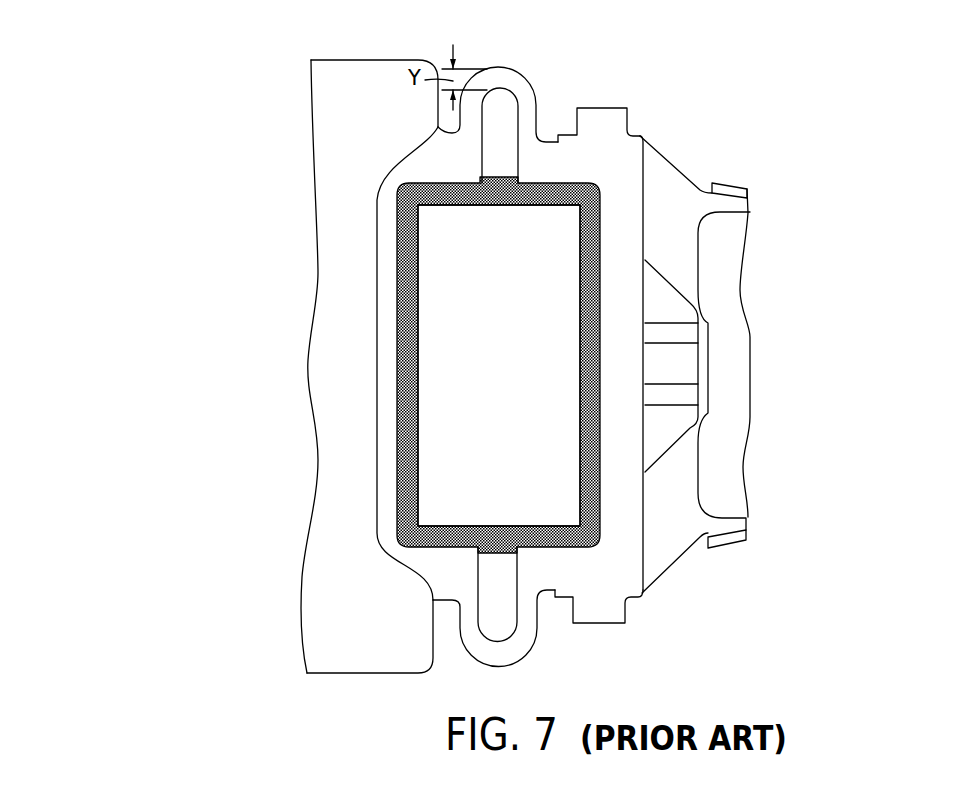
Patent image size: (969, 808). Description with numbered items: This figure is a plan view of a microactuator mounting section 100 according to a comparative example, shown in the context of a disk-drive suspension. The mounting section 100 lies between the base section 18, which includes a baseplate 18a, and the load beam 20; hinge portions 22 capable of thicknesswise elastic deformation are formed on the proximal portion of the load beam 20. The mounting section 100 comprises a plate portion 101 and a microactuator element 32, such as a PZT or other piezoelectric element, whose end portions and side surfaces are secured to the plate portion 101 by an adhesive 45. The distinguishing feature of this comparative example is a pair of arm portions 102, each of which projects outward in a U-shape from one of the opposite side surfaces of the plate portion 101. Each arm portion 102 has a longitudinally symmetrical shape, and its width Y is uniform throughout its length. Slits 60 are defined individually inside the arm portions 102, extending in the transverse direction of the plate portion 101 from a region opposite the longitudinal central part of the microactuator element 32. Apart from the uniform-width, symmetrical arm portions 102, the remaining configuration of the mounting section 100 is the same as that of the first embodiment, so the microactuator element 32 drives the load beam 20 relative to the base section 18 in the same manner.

The microactuator mounting section 100 is at (678, 76).
The plate portion 101 is at (597, 160).
The arm portion 102 is at (503, 77).
The base section 18 is at (300, 92).
The baseplate 18a is at (325, 330).
The load beam 20 is at (732, 183).
The hinge portion 22 is at (673, 187).
The microactuator element 32 is at (455, 398).
The adhesive 45 is at (405, 262).
The slit 60 is at (485, 150).